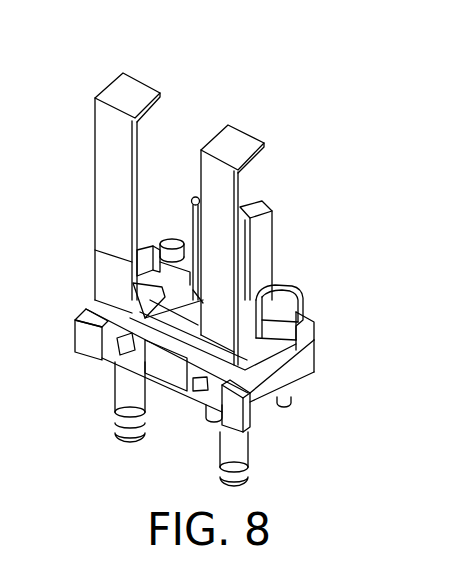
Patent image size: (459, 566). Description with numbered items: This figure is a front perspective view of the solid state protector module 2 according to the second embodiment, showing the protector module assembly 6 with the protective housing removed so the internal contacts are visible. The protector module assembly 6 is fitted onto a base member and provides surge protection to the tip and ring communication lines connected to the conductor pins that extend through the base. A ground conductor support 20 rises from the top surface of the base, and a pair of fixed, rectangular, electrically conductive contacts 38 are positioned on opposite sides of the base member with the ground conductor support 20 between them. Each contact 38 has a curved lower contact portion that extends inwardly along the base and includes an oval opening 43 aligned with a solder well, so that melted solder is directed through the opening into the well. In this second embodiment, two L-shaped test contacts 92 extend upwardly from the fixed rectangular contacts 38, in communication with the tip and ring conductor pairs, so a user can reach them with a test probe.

The solid state protector module 2 is at (240, 83).
The protector module assembly 6 is at (332, 225).
The ground conductor support 20 is at (193, 203).
The fixed rectangular electrically conductive contact 38 is at (277, 308).
The oval opening 43 is at (173, 262).
The L-shaped test contact 92 is at (102, 170).